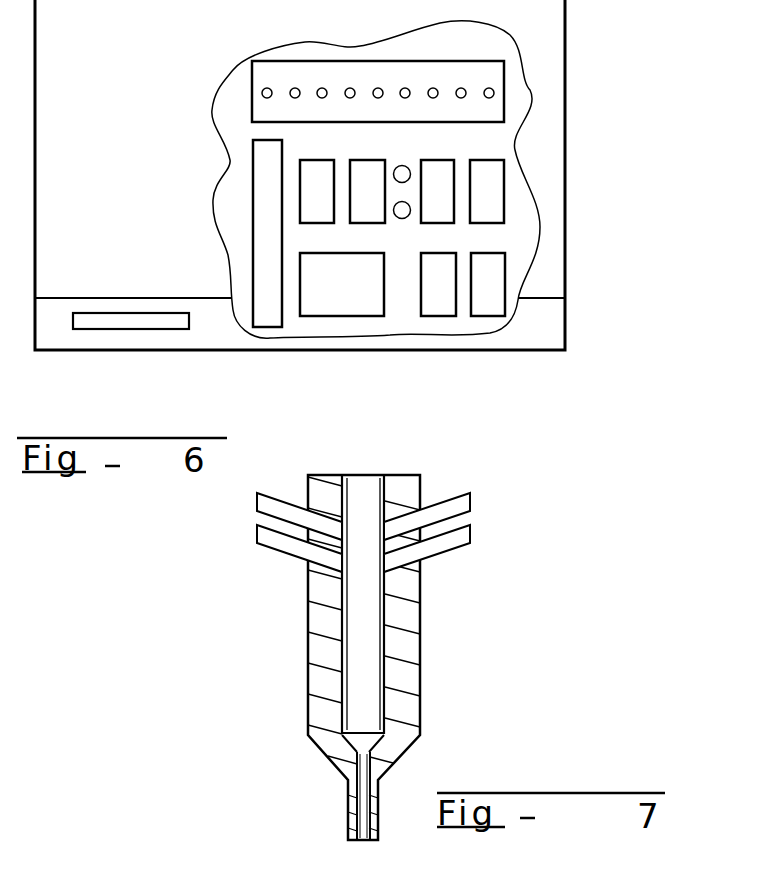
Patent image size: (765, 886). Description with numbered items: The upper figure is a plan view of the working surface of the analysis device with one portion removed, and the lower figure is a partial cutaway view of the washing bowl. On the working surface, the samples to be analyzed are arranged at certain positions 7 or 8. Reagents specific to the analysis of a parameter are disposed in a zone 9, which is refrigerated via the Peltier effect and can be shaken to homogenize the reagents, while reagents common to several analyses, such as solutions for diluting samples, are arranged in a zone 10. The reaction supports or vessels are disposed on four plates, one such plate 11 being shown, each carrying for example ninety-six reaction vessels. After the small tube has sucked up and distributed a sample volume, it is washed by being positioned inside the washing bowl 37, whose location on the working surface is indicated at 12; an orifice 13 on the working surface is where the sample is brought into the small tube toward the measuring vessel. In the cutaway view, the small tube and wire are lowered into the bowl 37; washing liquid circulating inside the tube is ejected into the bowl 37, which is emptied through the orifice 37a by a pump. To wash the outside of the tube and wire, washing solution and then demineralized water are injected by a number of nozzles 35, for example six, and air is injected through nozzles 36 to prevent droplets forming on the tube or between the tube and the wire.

In FIG. 6, the sample position 7 is at (352, 297).
In FIG. 6, the sample position 8 is at (443, 293).
In FIG. 6, the specific reagent zone 9 is at (486, 78).
In FIG. 6, the common reagent zone 10 is at (275, 297).
In FIG. 6, the plate 11 is at (492, 185).
In FIG. 6, the washing bowl position 12 is at (406, 167).
In FIG. 6, the orifice 13 is at (409, 216).
In FIG. 7, the washing nozzles 35 is at (471, 537).
In FIG. 7, the air nozzles 36 is at (471, 500).
In FIG. 7, the washing bowl 37 is at (330, 678).
In FIG. 7, the orifice 37a is at (365, 812).